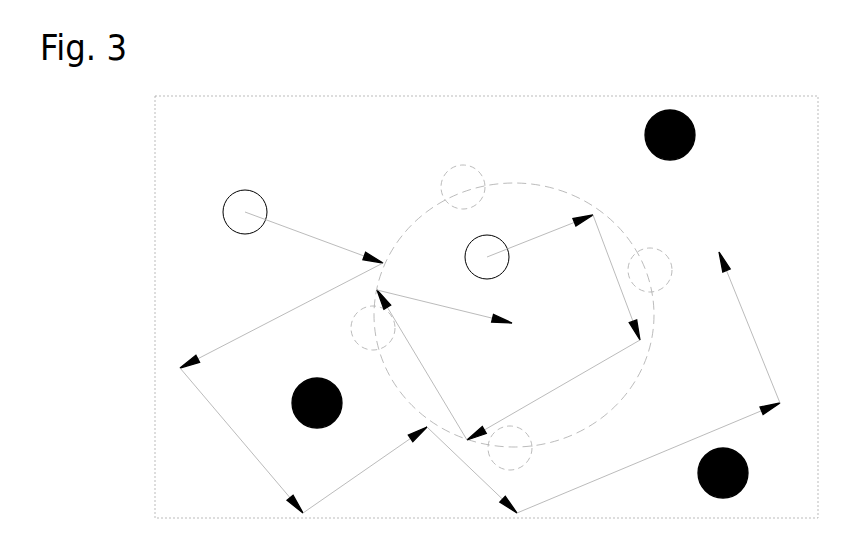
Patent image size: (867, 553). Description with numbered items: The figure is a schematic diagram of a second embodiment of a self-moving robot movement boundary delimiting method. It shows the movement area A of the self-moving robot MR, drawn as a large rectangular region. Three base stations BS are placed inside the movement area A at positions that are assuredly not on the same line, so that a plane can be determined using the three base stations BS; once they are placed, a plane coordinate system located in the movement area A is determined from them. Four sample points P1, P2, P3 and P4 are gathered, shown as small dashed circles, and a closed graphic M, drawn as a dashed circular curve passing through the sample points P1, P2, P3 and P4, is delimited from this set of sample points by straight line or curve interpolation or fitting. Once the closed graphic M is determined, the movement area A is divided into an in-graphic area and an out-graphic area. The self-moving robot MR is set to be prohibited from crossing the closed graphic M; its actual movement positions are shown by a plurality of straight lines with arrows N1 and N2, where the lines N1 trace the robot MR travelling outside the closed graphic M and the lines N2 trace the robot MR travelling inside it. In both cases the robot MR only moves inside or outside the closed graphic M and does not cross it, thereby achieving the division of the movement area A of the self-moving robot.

The movement area A is at (486, 307).
The closed graphic M is at (625, 375).
The self-moving robot MR is at (400, 211).
The base station BS is at (546, 307).
The sample point P1 is at (475, 176).
The sample point P2 is at (664, 260).
The sample point P3 is at (521, 461).
The sample point P4 is at (357, 328).
The straight line with arrows N1 is at (323, 241).
The straight line with arrows N2 is at (430, 378).